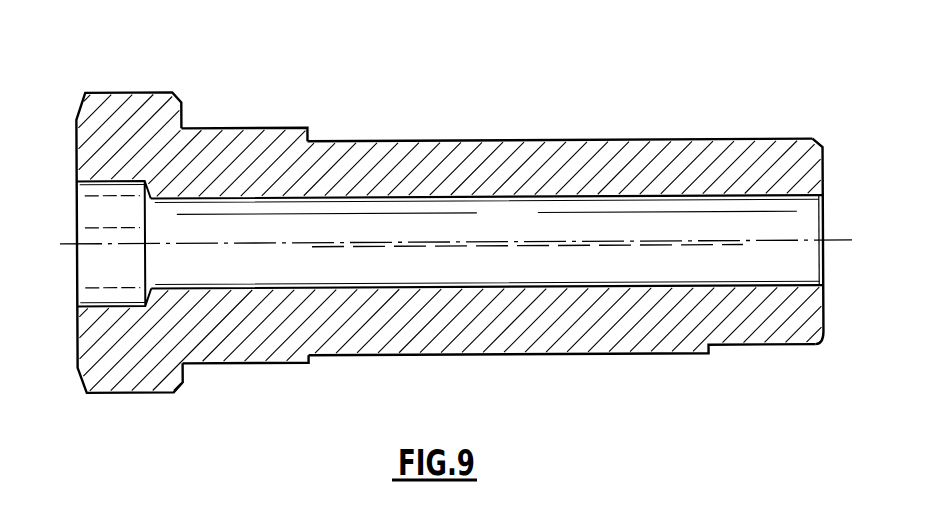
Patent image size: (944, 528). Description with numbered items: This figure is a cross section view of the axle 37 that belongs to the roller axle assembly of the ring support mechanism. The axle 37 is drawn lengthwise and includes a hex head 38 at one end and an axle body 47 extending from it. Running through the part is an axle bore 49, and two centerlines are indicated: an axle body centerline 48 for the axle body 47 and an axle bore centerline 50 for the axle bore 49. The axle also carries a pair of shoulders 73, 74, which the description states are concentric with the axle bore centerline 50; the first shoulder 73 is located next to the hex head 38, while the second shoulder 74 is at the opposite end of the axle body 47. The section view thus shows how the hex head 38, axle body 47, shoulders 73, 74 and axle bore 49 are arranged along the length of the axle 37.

The axle 37 is at (472, 63).
The hex head 38 is at (138, 93).
The shoulder 73 is at (243, 128).
The axle bore 49 is at (360, 208).
The axle bore centerline 50 is at (457, 245).
The axle body centerline 48 is at (423, 250).
The axle body 47 is at (625, 140).
The shoulder 74 is at (737, 138).